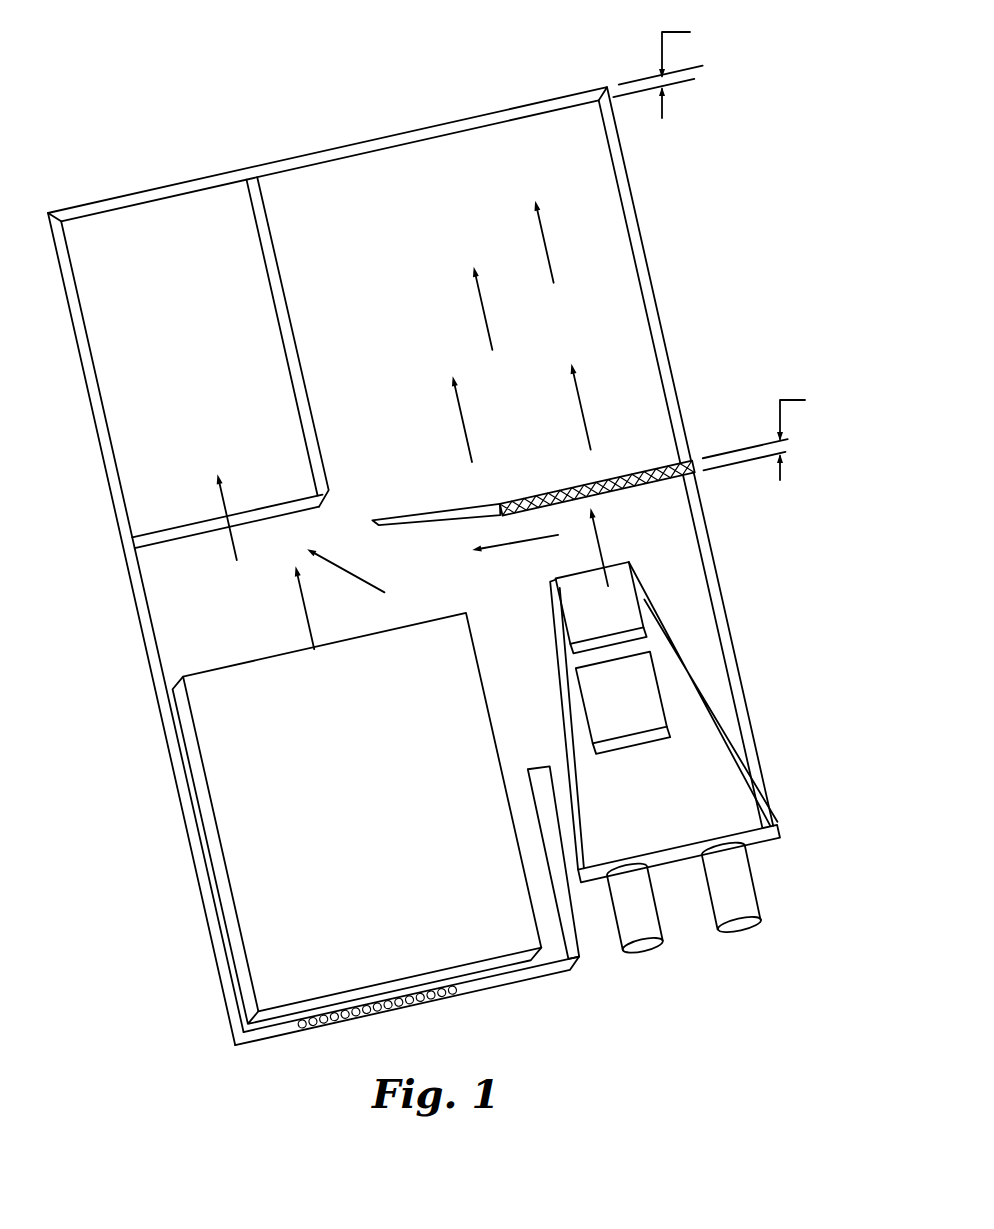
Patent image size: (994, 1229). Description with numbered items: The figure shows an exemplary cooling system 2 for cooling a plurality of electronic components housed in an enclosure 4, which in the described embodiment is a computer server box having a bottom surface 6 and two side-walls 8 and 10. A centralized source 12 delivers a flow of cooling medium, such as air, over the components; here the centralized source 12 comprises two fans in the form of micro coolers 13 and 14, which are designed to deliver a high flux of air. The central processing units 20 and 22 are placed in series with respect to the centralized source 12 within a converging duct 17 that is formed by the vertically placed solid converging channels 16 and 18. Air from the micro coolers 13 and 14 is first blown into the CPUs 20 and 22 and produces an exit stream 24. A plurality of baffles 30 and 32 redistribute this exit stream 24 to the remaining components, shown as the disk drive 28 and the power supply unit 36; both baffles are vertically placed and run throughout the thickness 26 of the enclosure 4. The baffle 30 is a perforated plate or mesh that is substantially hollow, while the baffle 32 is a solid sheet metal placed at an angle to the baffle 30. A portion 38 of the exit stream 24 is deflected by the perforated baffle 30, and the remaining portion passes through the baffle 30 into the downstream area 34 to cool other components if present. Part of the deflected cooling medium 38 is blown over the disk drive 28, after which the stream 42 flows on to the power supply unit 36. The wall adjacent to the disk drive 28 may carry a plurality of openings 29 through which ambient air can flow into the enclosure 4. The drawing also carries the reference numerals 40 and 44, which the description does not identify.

The cooling system 2 is at (421, 523).
The enclosure 4 is at (270, 172).
The bottom surface 6 is at (158, 612).
The side-wall 8 is at (660, 344).
The side-wall 10 is at (173, 772).
The centralized source 12 is at (694, 951).
The micro cooler 13 is at (643, 948).
The micro cooler 14 is at (739, 918).
The converging channel 16 is at (770, 812).
The converging duct 17 is at (712, 788).
The converging channel 18 is at (578, 876).
The central processing unit 20 is at (630, 680).
The central processing unit 22 is at (627, 597).
The exit stream 24 is at (598, 538).
The thickness 26 is at (726, 251).
The disk drive 28 is at (320, 987).
The openings 29 is at (383, 1013).
The baffle 30 is at (657, 482).
The baffle 32 is at (412, 513).
The downstream area 34 is at (550, 253).
The power supply unit 36 is at (176, 218).
The deflected portion of exit stream 38 is at (505, 546).
The air flow 40 is at (347, 574).
The stream 42 is at (307, 617).
The shelf 44 is at (217, 508).